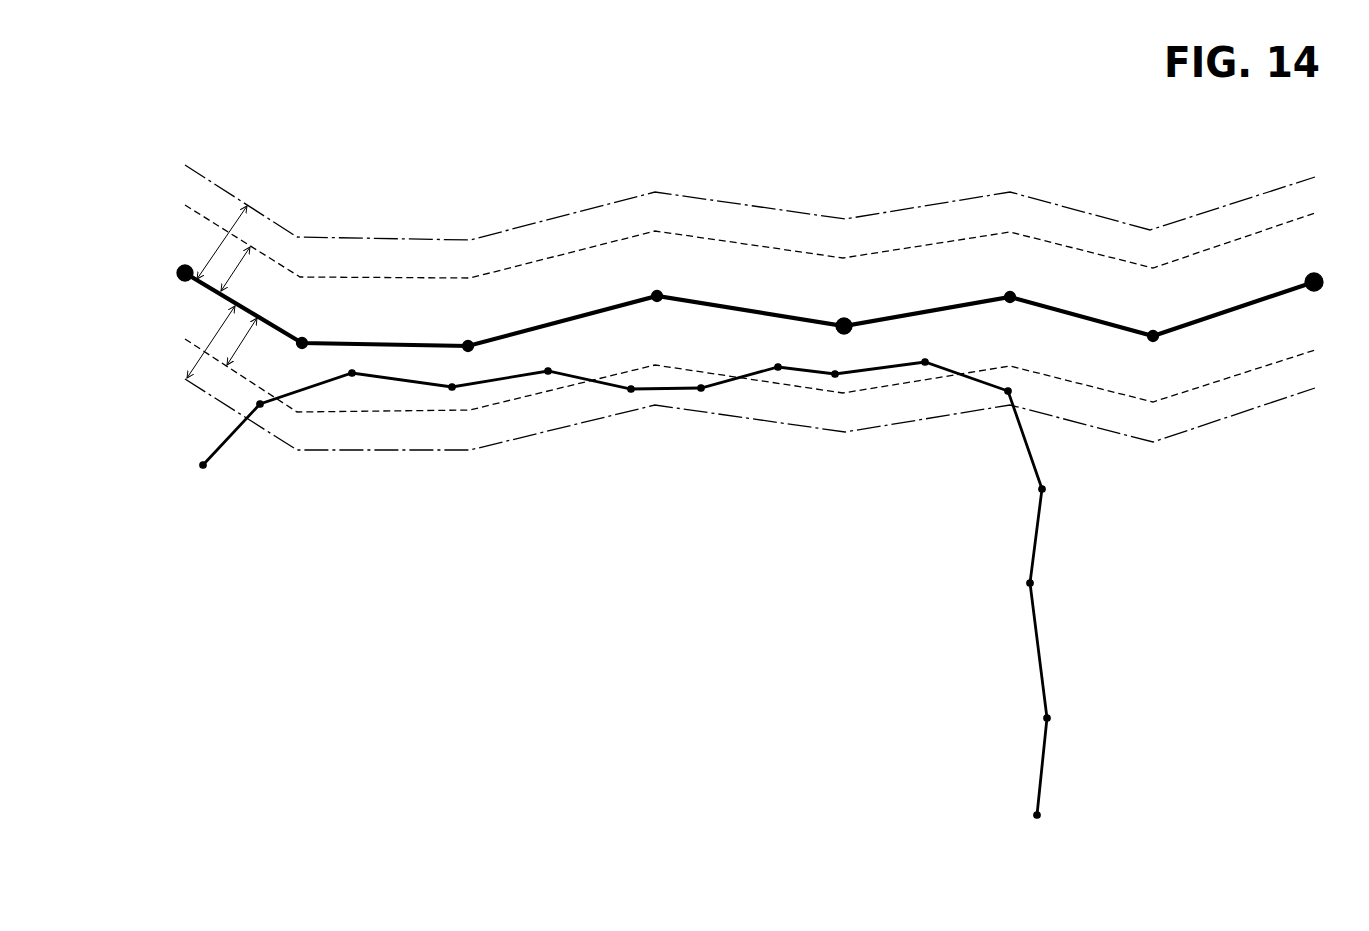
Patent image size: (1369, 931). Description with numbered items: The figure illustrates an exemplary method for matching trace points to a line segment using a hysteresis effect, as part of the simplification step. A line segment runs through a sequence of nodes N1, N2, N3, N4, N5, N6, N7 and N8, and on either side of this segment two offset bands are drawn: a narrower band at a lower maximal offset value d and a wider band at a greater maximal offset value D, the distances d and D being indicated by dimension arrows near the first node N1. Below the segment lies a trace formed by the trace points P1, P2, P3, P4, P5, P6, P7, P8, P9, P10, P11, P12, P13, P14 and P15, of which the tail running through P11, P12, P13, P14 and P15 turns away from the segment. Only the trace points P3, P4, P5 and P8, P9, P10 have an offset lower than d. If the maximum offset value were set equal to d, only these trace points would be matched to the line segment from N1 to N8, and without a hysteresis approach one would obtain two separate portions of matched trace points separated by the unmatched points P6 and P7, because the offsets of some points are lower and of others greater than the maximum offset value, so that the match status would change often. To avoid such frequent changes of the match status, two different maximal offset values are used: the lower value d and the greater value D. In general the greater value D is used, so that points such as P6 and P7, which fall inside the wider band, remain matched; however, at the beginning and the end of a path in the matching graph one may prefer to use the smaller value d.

The line segment node N1 is at (168, 278).
The line segment node N2 is at (310, 330).
The line segment node N3 is at (461, 334).
The line segment node N4 is at (650, 284).
The line segment node N5 is at (838, 314).
The line segment node N6 is at (1009, 285).
The line segment node N7 is at (1146, 272).
The line segment node N8 is at (1308, 268).
The trace point P1 is at (219, 480).
The trace point P2 is at (275, 416).
The trace point P3 is at (352, 386).
The trace point P4 is at (454, 375).
The trace point P5 is at (549, 359).
The trace point P6 is at (629, 400).
The trace point P7 is at (702, 399).
The trace point P8 is at (779, 354).
The trace point P9 is at (837, 363).
The trace point P10 is at (931, 350).
The trace point P11 is at (1031, 391).
The trace point P12 is at (1068, 488).
The trace point P13 is at (1053, 583).
The trace point P14 is at (1072, 720).
The trace point P15 is at (1061, 817).
The greater maximal offset value D is at (217, 292).
The lower maximal offset value d is at (239, 306).